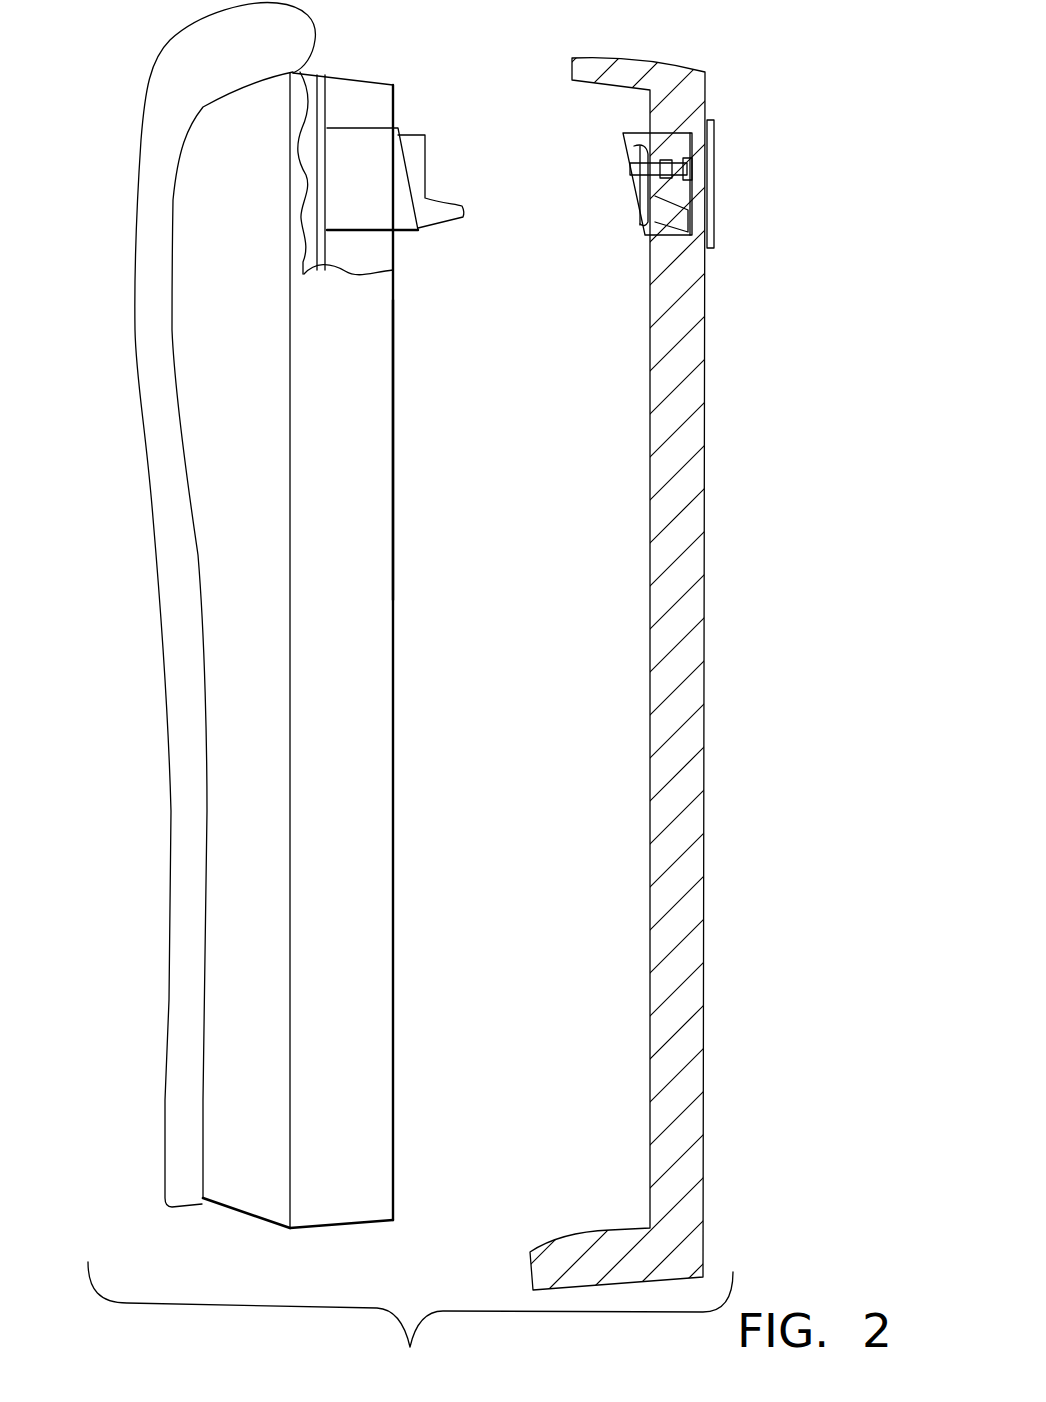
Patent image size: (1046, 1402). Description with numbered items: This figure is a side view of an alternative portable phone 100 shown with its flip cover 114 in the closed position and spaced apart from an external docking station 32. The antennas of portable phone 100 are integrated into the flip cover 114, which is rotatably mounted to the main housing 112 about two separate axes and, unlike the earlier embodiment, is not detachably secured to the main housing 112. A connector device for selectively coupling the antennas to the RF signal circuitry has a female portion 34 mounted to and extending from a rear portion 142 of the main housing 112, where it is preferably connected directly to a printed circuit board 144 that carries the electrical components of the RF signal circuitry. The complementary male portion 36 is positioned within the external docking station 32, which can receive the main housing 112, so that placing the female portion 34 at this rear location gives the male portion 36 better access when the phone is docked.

The external docking station 32 is at (690, 83).
The female portion 34 is at (402, 236).
The male portion 36 is at (630, 204).
The portable phone 100 is at (292, 615).
The main housing 112 is at (354, 576).
The flip cover 114 is at (181, 629).
The rear portion 142 is at (394, 451).
The printed circuit board 144 is at (322, 253).